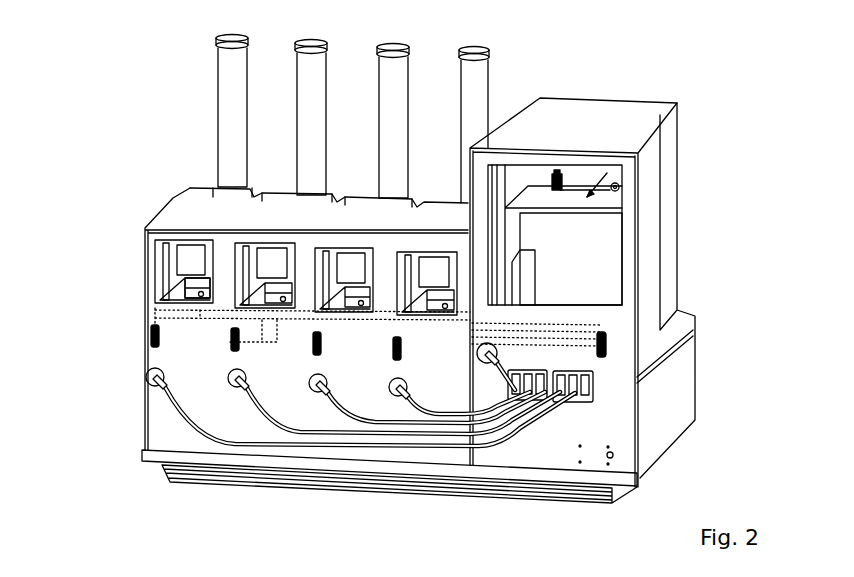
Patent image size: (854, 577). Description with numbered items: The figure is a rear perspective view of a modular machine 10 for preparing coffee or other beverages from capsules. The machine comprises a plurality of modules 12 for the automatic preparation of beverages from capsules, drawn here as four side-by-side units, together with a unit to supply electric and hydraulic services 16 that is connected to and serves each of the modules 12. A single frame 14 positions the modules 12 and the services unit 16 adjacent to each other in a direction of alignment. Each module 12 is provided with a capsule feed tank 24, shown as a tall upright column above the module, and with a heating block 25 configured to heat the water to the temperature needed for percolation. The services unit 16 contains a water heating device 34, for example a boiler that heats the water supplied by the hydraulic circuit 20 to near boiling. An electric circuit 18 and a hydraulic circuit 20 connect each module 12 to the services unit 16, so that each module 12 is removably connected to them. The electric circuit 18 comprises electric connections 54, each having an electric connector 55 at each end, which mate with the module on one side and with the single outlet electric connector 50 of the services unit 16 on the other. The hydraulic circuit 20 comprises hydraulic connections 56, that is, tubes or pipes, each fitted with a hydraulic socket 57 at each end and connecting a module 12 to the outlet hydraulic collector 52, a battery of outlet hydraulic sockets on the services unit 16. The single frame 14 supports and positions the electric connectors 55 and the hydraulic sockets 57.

The modular machine 10 is at (92, 162).
The module for the automatic preparation of beverages from capsules 12 is at (208, 208).
The single frame 14 is at (142, 466).
The unit to supply electric and hydraulic services 16 is at (568, 124).
The electric circuit 18 is at (567, 323).
The hydraulic circuit 20 is at (409, 453).
The capsule feed tank 24 is at (230, 83).
The heating block 25 is at (210, 297).
The water heating device 34 is at (602, 243).
The outlet electric connector 50 is at (608, 343).
The outlet hydraulic collector 52 is at (593, 392).
The electric connection 54 is at (200, 311).
The electric connector 55 is at (150, 336).
The hydraulic connection 56 is at (490, 423).
The hydraulic socket 57 is at (228, 384).